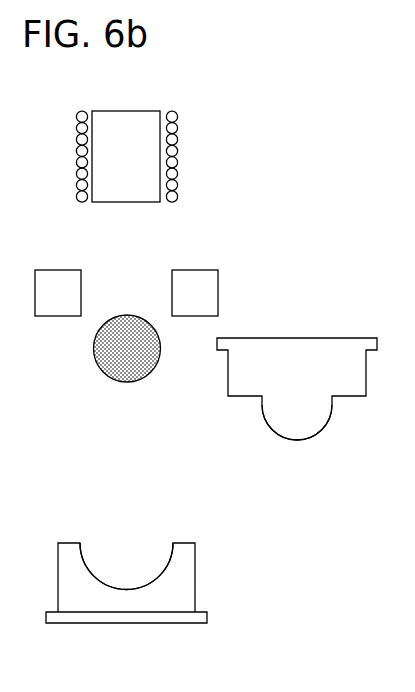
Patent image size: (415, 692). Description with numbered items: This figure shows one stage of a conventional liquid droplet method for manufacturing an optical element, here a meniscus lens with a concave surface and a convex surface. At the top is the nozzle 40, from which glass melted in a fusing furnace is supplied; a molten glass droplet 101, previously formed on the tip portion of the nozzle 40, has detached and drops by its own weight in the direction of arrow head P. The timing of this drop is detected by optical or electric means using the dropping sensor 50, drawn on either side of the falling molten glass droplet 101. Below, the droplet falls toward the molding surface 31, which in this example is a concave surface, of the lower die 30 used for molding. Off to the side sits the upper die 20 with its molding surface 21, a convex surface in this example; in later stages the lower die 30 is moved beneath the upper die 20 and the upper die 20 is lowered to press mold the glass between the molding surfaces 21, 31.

The nozzle 40 is at (147, 111).
The dropping sensor 50 is at (55, 270).
The molten glass droplet 101 is at (144, 380).
The arrow head P is at (130, 417).
The upper die 20 is at (329, 338).
The molding surface 21 is at (320, 437).
The lower die 30 is at (195, 565).
The molding surface 31 is at (145, 580).